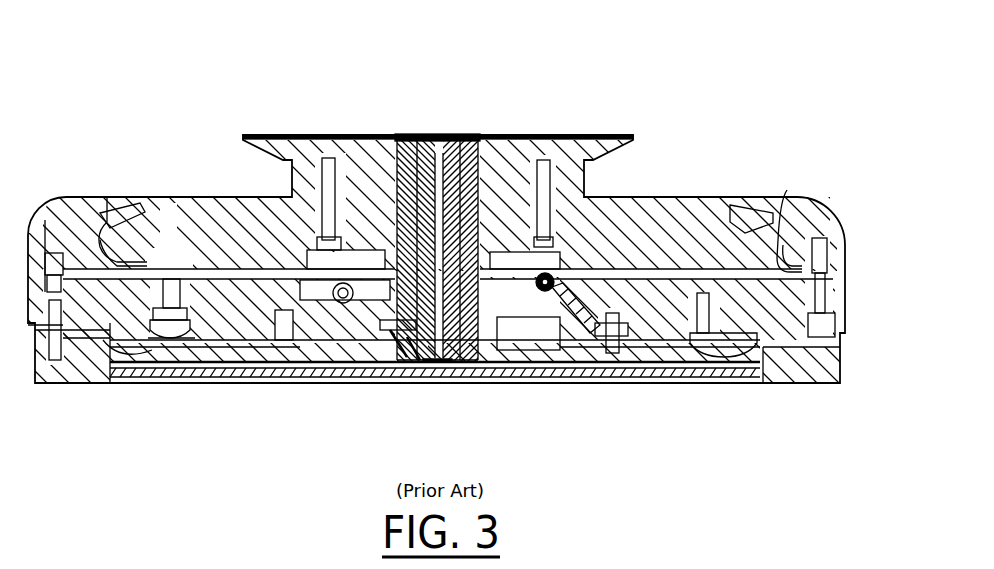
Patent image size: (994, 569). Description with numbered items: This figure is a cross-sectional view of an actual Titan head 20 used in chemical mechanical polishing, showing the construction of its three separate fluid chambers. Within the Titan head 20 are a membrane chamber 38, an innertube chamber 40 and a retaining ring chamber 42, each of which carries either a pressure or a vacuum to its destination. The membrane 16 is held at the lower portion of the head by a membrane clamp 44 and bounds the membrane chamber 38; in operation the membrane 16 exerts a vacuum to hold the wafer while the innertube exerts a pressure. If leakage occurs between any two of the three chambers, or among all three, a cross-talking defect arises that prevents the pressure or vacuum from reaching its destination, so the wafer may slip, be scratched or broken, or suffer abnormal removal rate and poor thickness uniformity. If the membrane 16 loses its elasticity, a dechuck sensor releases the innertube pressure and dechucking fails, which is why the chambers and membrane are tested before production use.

The Titan head 20 is at (648, 28).
The retaining ring chamber 42 is at (107, 197).
The innertube chamber 40 is at (528, 357).
The membrane chamber 38 is at (135, 345).
The membrane clamp 44 is at (167, 362).
The membrane 16 is at (353, 370).